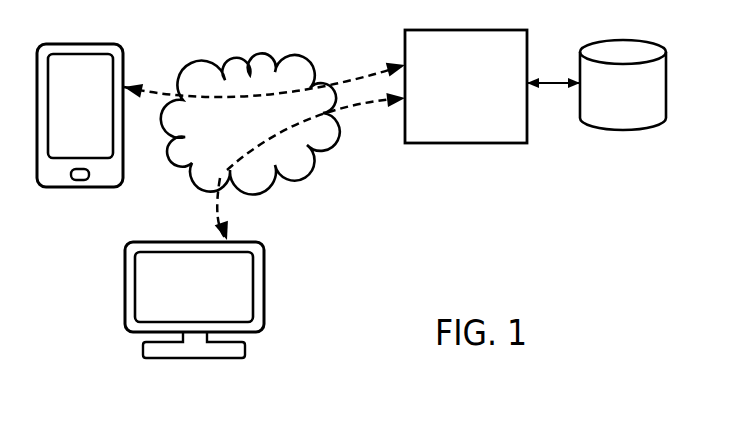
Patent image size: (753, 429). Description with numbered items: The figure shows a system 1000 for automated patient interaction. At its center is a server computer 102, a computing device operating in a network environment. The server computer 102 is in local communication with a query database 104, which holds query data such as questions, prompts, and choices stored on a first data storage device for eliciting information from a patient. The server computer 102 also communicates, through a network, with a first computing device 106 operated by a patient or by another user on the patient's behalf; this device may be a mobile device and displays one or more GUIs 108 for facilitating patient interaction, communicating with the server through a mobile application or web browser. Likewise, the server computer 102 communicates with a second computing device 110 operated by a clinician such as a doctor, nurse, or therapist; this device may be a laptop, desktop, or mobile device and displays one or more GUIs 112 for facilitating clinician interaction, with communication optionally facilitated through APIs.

The server computer 102 is at (466, 86).
The query database 104 is at (600, 101).
The first computing device 106 is at (77, 141).
The GUI 108 is at (57, 115).
The second computing device 110 is at (194, 325).
The GUI 112 is at (172, 300).
The system 1000 is at (610, 232).